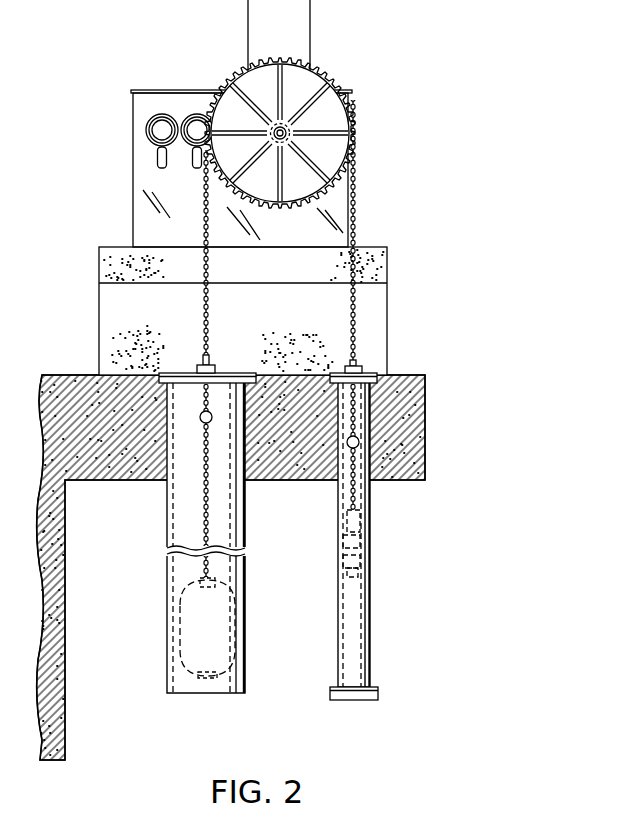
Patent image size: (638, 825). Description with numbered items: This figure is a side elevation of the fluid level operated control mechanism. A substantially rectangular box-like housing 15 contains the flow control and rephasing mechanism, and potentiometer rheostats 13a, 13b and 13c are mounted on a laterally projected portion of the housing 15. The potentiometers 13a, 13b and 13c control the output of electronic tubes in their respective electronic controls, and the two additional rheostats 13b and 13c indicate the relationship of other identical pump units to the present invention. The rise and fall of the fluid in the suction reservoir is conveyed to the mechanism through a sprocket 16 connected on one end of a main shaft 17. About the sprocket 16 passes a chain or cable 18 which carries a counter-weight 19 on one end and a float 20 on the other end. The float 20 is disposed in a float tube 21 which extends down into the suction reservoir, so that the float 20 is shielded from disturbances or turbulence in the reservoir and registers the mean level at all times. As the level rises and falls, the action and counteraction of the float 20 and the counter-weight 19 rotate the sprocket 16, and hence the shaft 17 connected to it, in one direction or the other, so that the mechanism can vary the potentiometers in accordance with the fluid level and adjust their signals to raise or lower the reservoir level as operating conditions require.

The potentiometer rheostat 13a is at (160, 130).
The potentiometer rheostat 13b is at (197, 128).
The potentiometer rheostat 13c is at (235, 128).
The box-like housing 15 is at (333, 200).
The sprocket 16 is at (313, 100).
The main shaft 17 is at (287, 137).
The chain or cable 18 is at (357, 227).
The counter-weight 19 is at (355, 547).
The float 20 is at (220, 632).
The float tube 21 is at (164, 676).